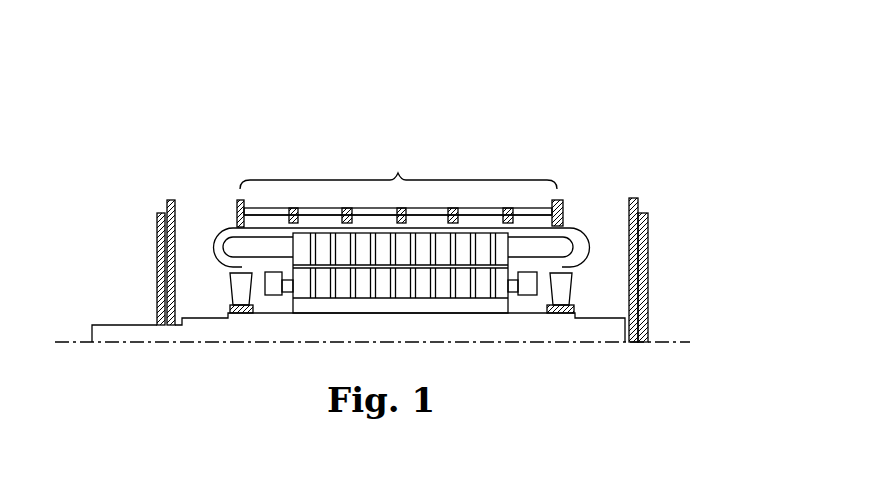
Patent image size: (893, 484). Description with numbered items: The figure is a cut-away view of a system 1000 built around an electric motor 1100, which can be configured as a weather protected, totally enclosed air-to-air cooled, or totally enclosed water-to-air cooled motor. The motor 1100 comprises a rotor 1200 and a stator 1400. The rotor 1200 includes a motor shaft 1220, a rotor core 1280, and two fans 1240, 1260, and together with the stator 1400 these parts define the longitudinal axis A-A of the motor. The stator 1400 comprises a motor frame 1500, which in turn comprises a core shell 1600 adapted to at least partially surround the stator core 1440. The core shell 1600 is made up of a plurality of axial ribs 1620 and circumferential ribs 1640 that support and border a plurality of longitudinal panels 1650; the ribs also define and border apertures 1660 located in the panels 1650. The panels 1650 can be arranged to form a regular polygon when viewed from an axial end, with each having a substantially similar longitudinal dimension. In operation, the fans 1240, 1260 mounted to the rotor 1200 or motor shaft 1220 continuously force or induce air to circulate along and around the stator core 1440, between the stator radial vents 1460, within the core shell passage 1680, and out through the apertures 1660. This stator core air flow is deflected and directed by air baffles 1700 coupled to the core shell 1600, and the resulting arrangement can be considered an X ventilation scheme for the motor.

The system 1000 is at (298, 32).
The electric motor 1100 is at (378, 70).
The rotor 1200 is at (493, 385).
The motor shaft 1220 is at (103, 328).
The fan 1240 is at (233, 288).
The fan 1260 is at (576, 287).
The rotor core 1280 is at (335, 284).
The stator 1400 is at (448, 113).
The stator core 1440 is at (226, 252).
The stator radial vents 1460 is at (493, 250).
The motor frame 1500 is at (633, 197).
The core shell 1600 is at (398, 177).
The longitudinal panels 1650 is at (398, 177).
The axial ribs 1620 is at (551, 207).
The circumferential ribs 1640 is at (291, 208).
The apertures 1660 is at (477, 208).
The core shell passage 1680 is at (261, 219).
The air baffles 1700 is at (593, 236).